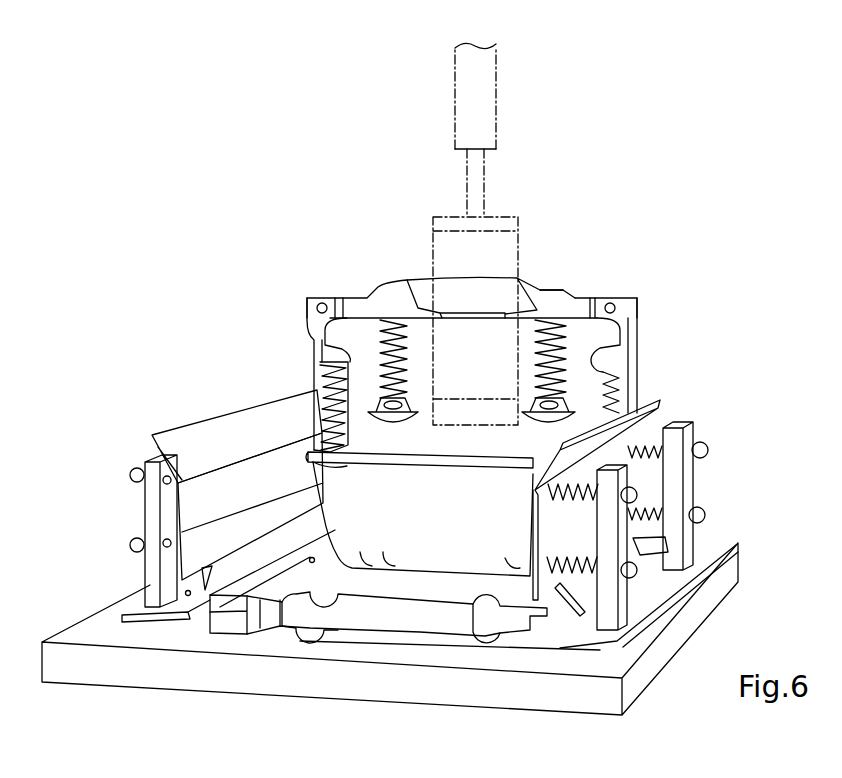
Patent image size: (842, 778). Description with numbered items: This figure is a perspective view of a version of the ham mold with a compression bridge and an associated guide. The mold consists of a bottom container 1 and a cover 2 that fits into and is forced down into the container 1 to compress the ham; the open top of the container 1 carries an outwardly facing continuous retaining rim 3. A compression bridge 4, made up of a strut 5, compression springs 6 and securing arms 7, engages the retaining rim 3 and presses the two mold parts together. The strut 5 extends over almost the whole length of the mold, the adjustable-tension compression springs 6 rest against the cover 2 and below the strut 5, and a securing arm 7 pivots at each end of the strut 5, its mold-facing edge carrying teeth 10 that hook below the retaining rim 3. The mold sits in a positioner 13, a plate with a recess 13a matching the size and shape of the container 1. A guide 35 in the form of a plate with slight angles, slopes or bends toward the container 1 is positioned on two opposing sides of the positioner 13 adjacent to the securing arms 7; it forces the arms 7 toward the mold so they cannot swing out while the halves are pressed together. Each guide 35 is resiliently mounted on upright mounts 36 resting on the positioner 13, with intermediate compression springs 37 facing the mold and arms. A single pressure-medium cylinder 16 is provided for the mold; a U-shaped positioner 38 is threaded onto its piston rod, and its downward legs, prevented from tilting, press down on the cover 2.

The container 1 is at (456, 556).
The cover 2 is at (462, 445).
The retaining rim 3 is at (237, 490).
The compression bridge 4 is at (358, 303).
The strut 5 is at (392, 300).
The compression springs 6 is at (578, 318).
The securing arms 7 is at (322, 343).
The teeth 10 is at (322, 370).
The positioner 13 is at (200, 665).
The recess 13a is at (390, 635).
The pressure-medium cylinder 16 is at (477, 88).
The guide 35 is at (630, 430).
The upright mounts 36 is at (612, 543).
The compression springs 37 is at (548, 560).
The U-shaped positioner 38 is at (500, 248).